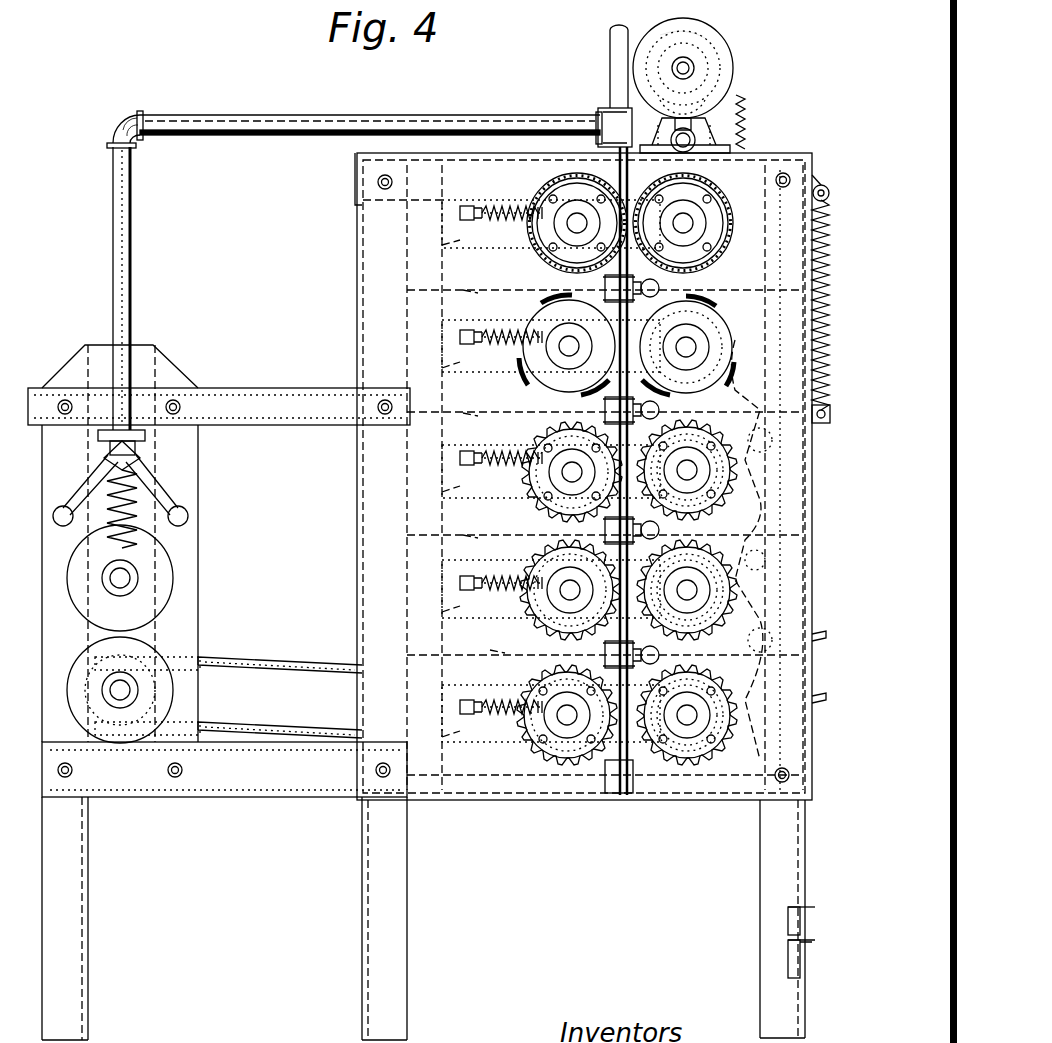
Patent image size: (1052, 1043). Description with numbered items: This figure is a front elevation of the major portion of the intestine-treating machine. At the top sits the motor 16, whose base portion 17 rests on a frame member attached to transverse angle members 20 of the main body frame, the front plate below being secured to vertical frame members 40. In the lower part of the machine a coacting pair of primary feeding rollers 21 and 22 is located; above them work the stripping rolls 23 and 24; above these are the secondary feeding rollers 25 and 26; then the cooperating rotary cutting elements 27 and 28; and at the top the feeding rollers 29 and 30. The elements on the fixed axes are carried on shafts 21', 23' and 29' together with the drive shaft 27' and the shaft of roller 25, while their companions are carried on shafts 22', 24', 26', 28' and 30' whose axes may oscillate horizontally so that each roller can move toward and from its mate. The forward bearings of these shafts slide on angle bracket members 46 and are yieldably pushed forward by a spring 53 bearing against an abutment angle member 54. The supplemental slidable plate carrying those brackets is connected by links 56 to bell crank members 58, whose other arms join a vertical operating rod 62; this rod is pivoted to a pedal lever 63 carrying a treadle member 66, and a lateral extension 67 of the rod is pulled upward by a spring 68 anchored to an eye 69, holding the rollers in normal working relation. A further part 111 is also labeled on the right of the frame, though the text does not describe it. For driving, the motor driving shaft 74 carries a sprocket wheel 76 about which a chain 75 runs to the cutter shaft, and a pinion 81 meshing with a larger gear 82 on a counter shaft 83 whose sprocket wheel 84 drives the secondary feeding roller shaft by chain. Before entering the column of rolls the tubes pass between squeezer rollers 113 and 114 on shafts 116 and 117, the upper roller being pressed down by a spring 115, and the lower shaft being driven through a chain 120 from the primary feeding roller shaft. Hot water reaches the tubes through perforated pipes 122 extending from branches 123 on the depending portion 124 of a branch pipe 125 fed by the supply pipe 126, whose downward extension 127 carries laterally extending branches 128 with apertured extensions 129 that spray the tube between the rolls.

The motor 16 is at (710, 52).
The base portion 17 is at (720, 125).
The transverse angle members 20 is at (355, 182).
The primary feeding roller 21 is at (696, 722).
The shaft 21' is at (733, 695).
The primary feeding roller 22 is at (557, 716).
The shaft 22' is at (544, 766).
The stripping roll 23 is at (695, 604).
The shaft 23' is at (734, 577).
The stripping roll 24 is at (559, 590).
The shaft 24' is at (526, 598).
The secondary feeding roller 25 is at (712, 500).
The secondary feeding roller 26 is at (563, 472).
The shaft 26' is at (530, 489).
The rotary cutting element 27 is at (705, 345).
The drive shaft 27' is at (749, 312).
The rotary cutting element 28 is at (551, 357).
The shaft 28' is at (531, 377).
The feeding roller 29 is at (710, 223).
The driving shaft 29' is at (729, 211).
The feeding roller 30 is at (558, 224).
The shaft 30' is at (530, 236).
The vertical frame members 40 is at (400, 926).
The angle bracket members 46 is at (477, 479).
The spring 53 is at (501, 446).
The angle member 54 is at (448, 238).
The links 56 is at (815, 648).
The bell crank members 58 is at (770, 330).
The operating rod 62 is at (805, 530).
The pedal lever 63 is at (809, 920).
The treadle member 66 is at (809, 959).
The lateral extension 67 is at (823, 427).
The spring 68 is at (818, 262).
The eye 69 is at (824, 178).
The driving shaft 74 is at (694, 68).
The chain 75 is at (698, 137).
The sprocket wheel 76 is at (688, 98).
The pinion 81 is at (722, 42).
The gear 82 is at (743, 100).
The counter shaft 83 is at (700, 153).
The sprocket wheel 84 is at (597, 115).
The pin 111 is at (820, 686).
The squeezer roller 113 is at (165, 677).
The squeezer roller 114 is at (165, 585).
The spring 115 is at (135, 495).
The shaft 116 is at (112, 693).
The shaft 117 is at (112, 583).
The chain 120 is at (308, 660).
The perforated pipes 122 is at (58, 525).
The branches 123 is at (90, 485).
The depending portion 124 is at (132, 247).
The branch pipe 125 is at (303, 137).
The supply pipe 126 is at (610, 60).
The downward extension 127 is at (615, 152).
The laterally extending branches 128 is at (602, 534).
The apertured extensions 129 is at (660, 288).